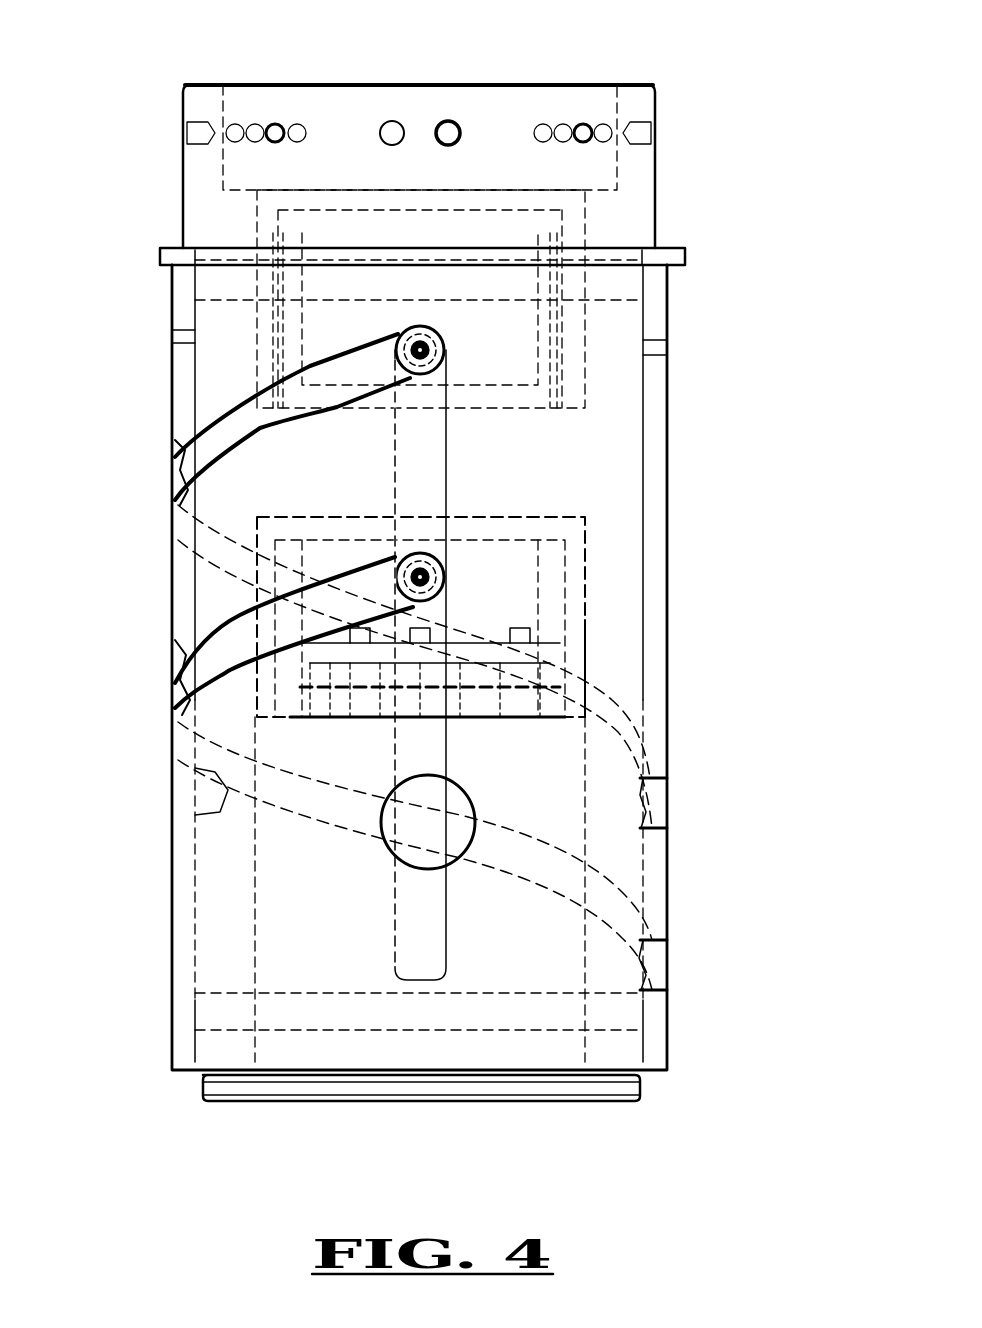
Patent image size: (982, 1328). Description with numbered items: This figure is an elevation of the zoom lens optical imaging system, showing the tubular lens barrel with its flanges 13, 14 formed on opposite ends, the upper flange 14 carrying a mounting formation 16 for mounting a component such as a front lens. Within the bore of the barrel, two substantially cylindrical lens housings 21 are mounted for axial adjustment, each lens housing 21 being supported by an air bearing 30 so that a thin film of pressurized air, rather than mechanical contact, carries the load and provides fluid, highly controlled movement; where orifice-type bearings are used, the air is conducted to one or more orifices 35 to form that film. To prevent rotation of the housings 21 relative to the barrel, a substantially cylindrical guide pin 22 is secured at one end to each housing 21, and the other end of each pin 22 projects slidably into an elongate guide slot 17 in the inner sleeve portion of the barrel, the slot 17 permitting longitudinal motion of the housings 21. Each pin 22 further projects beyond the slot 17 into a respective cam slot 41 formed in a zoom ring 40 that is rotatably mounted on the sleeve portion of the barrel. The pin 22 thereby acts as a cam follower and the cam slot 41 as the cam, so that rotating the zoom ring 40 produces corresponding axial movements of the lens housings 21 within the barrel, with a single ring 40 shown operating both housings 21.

The flange 13 is at (205, 1087).
The flange 14 is at (200, 105).
The mounting formation 16 is at (405, 130).
The elongate guide slot 17 is at (432, 735).
The lens housing 21 is at (290, 345).
The guide pin 22 is at (445, 577).
The air bearing 30 is at (263, 280).
The orifice 35 is at (277, 320).
The zoom ring 40 is at (667, 875).
The cam slot 41 is at (617, 897).